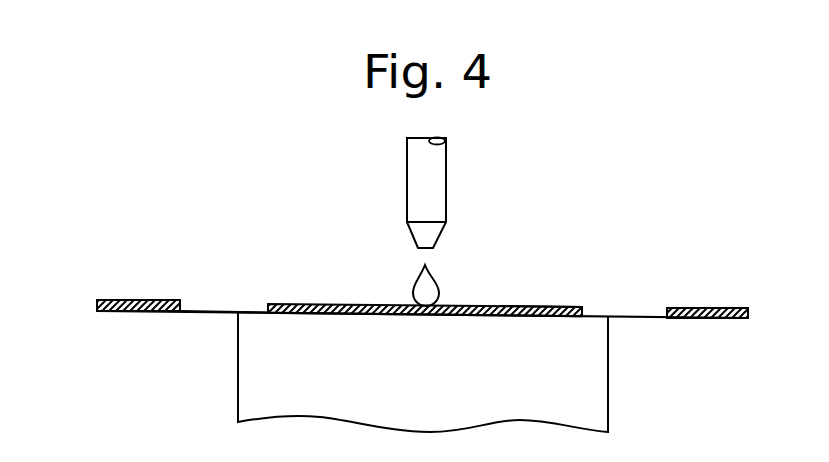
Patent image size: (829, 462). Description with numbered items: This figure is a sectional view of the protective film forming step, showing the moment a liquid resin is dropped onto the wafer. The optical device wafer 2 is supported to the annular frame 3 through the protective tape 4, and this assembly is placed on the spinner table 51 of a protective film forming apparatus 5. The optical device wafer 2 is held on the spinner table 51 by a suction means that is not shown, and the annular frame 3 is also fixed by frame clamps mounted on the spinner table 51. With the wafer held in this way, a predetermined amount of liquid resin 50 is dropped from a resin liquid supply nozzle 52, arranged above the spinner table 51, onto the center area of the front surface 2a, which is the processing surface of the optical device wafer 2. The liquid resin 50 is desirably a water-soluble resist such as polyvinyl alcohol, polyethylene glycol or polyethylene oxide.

The optical device wafer 2 is at (342, 300).
The front surface 2a is at (552, 307).
The annular frame 3 is at (135, 298).
The protective tape 4 is at (212, 311).
The protective film forming apparatus 5 is at (611, 283).
The liquid resin 50 is at (434, 288).
The spinner table 51 is at (594, 385).
The resin liquid supply nozzle 52 is at (440, 173).